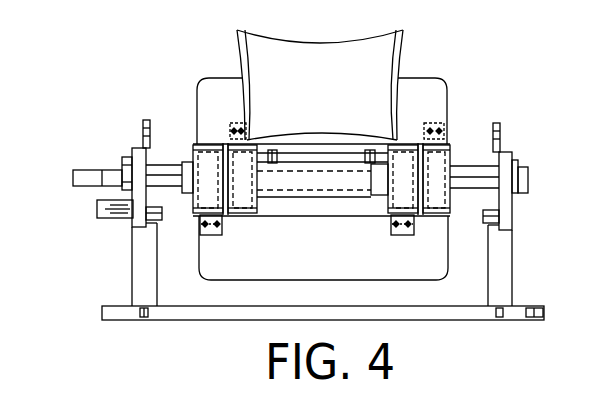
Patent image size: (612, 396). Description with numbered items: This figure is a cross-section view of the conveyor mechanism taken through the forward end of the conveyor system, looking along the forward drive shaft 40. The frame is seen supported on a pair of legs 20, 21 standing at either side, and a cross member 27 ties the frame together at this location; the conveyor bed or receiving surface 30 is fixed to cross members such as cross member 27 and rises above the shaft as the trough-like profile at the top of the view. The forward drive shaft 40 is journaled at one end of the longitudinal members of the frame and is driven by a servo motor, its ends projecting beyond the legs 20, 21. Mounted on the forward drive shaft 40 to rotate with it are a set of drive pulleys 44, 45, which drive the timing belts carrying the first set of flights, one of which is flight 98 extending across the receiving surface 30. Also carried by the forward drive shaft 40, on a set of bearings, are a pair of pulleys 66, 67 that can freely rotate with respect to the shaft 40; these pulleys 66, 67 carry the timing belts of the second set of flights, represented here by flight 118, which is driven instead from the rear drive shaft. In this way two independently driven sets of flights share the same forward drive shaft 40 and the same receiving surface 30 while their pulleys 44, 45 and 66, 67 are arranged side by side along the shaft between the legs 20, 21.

The leg 20 is at (501, 259).
The leg 21 is at (145, 284).
The cross member 27 is at (474, 163).
The conveyor bed or receiving surface 30 is at (332, 145).
The forward drive shaft 40 is at (110, 178).
The drive pulley 44 is at (242, 212).
The drive pulley 45 is at (437, 165).
The pulley 66 is at (212, 158).
The pulley 67 is at (406, 205).
The flight 98 is at (214, 98).
The flight 118 is at (429, 270).